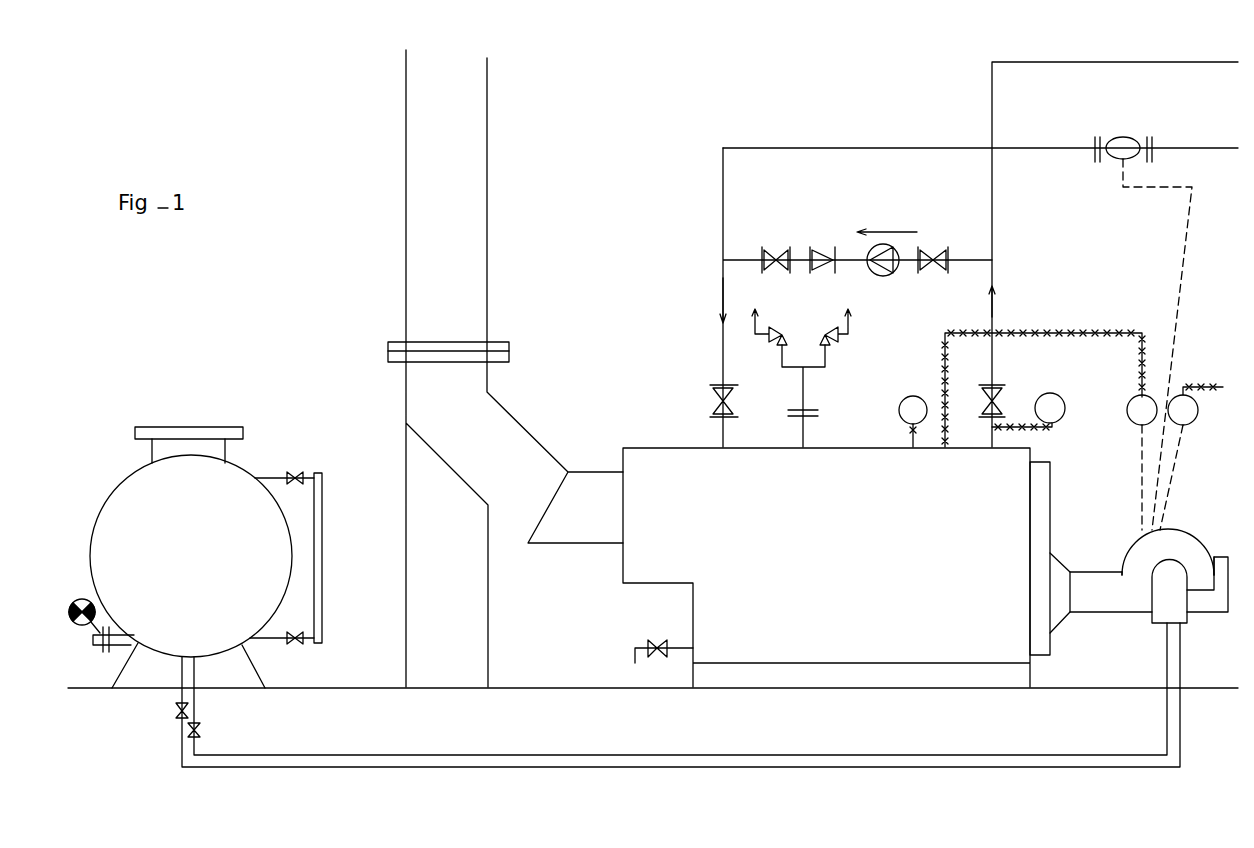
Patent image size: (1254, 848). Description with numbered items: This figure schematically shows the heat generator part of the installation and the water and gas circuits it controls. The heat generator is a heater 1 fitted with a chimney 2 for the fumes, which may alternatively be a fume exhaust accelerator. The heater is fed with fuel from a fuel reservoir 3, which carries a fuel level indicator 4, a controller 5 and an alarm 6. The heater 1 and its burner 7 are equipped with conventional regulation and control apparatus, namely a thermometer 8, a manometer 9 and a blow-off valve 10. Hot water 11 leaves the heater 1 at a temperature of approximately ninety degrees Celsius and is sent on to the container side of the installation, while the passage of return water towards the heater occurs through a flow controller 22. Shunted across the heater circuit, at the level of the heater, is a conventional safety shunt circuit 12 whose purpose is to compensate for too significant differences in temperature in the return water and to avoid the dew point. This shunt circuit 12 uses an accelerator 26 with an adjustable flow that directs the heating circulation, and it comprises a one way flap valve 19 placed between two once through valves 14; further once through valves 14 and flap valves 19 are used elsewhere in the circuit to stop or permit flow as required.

The heater 1 is at (846, 516).
The chimney 2 is at (458, 302).
The fuel reservoir 3 is at (635, 597).
The fuel level indicator 4 is at (318, 574).
The controller 5 is at (95, 646).
The alarm 6 is at (81, 599).
The burner 7 is at (1187, 530).
The thermometer 8 is at (1063, 413).
The manometer 9 is at (900, 400).
The blow-off valve 10 is at (783, 333).
The hot water 11 is at (1095, 62).
The shunt circuit 12 is at (967, 257).
The once through valve 14 is at (777, 253).
The one way flap valve 19 is at (820, 248).
The flow controller 22 is at (1123, 148).
The accelerator 26 is at (888, 274).